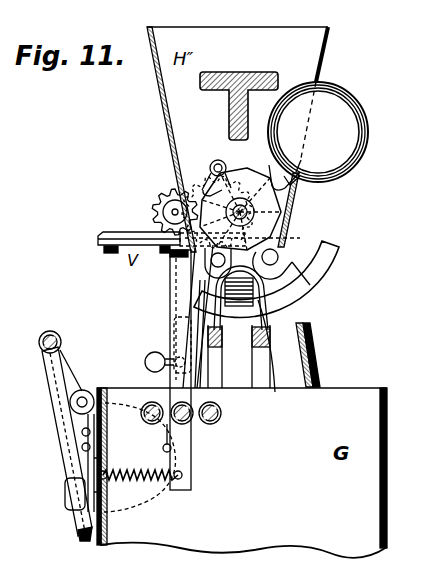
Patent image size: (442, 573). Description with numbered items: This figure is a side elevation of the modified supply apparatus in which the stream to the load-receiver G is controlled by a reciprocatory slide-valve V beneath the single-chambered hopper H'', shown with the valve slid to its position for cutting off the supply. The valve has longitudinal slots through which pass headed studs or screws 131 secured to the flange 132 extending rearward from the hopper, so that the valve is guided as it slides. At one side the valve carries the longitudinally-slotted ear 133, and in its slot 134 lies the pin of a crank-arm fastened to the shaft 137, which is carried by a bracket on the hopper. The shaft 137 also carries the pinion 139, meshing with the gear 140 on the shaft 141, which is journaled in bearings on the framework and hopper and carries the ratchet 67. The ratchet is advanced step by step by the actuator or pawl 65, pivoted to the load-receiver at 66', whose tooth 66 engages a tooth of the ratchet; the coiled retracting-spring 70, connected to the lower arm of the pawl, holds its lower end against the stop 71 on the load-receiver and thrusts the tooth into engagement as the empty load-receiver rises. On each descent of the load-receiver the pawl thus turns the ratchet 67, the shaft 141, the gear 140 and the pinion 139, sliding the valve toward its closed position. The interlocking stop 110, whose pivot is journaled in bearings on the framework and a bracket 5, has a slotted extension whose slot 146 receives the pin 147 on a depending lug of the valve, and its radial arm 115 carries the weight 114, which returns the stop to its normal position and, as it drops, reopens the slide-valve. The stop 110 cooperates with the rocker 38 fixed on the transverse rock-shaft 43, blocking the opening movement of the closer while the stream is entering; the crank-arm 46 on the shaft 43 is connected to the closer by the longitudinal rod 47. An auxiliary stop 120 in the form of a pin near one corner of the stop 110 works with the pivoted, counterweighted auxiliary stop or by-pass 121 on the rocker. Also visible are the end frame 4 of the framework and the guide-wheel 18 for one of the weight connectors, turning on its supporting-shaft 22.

The bracket 5 is at (256, 72).
The weight 114 is at (343, 97).
The shaft 141 is at (248, 212).
The pinion 139 is at (173, 210).
The shaft 137 is at (162, 194).
The longitudinally-slotted projection or ear 133 is at (217, 160).
The slot 134 is at (214, 172).
The arm 115 is at (271, 170).
The ratchet 67 is at (285, 176).
The gear 140 is at (300, 190).
The flange 132 is at (123, 236).
The headed studs or screws 131 is at (105, 248).
The stop 110 is at (318, 279).
The guide-wheel 18 is at (262, 302).
The slot 146 is at (282, 268).
The pin 147 is at (296, 303).
The end frame 4 is at (303, 362).
The supporting-shaft 22 is at (271, 355).
The tooth 66 is at (185, 269).
The actuator or pawl 65 is at (177, 286).
The auxiliary stop 120 is at (187, 302).
The auxiliary stop or by-pass 121 is at (173, 343).
The pivot 66' is at (187, 428).
The coiled retracting-spring 70 is at (132, 474).
The stop 71 is at (163, 447).
The crank-arm 46 is at (70, 367).
The transverse rock-shaft 43 is at (70, 403).
The rocker 38 is at (68, 492).
The longitudinal rod 47 is at (78, 521).